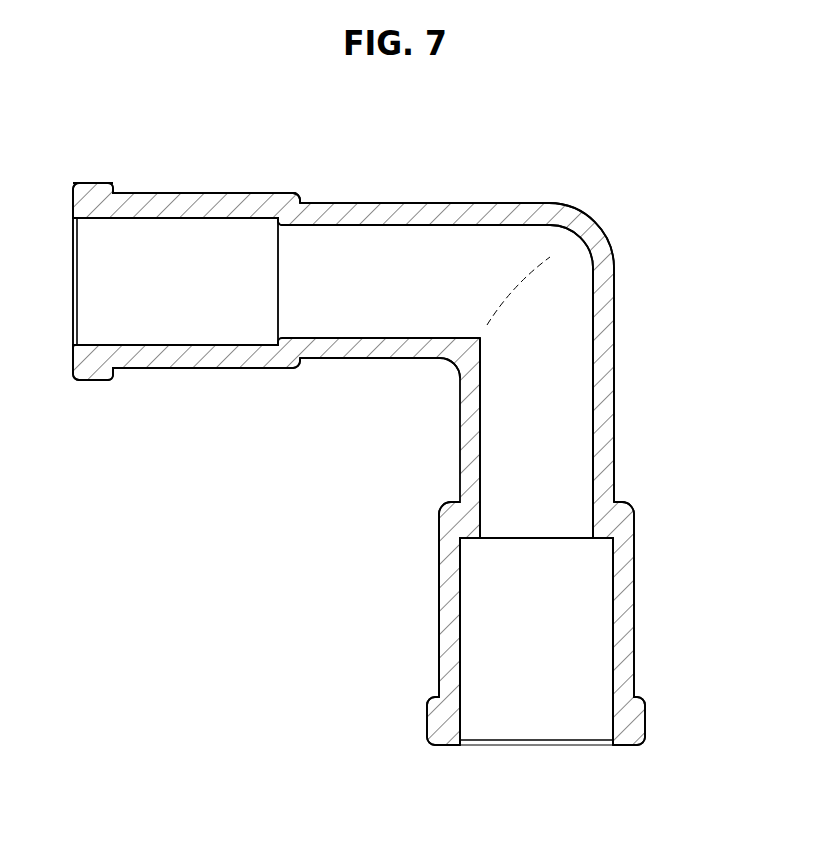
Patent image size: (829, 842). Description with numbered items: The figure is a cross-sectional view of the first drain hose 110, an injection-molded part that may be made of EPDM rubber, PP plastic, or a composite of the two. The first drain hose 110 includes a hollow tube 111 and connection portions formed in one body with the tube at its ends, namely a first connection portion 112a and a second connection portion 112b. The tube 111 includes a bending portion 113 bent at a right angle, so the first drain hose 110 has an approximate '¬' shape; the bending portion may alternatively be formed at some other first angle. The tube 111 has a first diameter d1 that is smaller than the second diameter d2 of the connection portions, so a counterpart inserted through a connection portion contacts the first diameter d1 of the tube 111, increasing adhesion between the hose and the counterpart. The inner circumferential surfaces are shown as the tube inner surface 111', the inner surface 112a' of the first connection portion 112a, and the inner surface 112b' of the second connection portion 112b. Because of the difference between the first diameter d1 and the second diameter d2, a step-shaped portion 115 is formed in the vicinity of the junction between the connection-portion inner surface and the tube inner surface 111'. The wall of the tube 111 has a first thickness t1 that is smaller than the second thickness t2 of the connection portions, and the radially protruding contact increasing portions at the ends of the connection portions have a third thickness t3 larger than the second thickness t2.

The first drain hose 110 is at (693, 151).
The tube 111 is at (638, 403).
The tube inner surface 111' is at (416, 315).
The first connection portion 112a is at (186, 310).
The inner surface of the first connection portion 112a' is at (177, 328).
The second connection portion 112b is at (576, 623).
The inner surface of the second connection portion 112b' is at (476, 641).
The bending portion 113 is at (593, 227).
The step-shaped portion 115 is at (276, 222).
The first thickness t1 is at (383, 255).
The second thickness t2 is at (183, 250).
The third thickness t3 is at (93, 245).
The first diameter d1 is at (593, 459).
The second diameter d2 is at (613, 645).